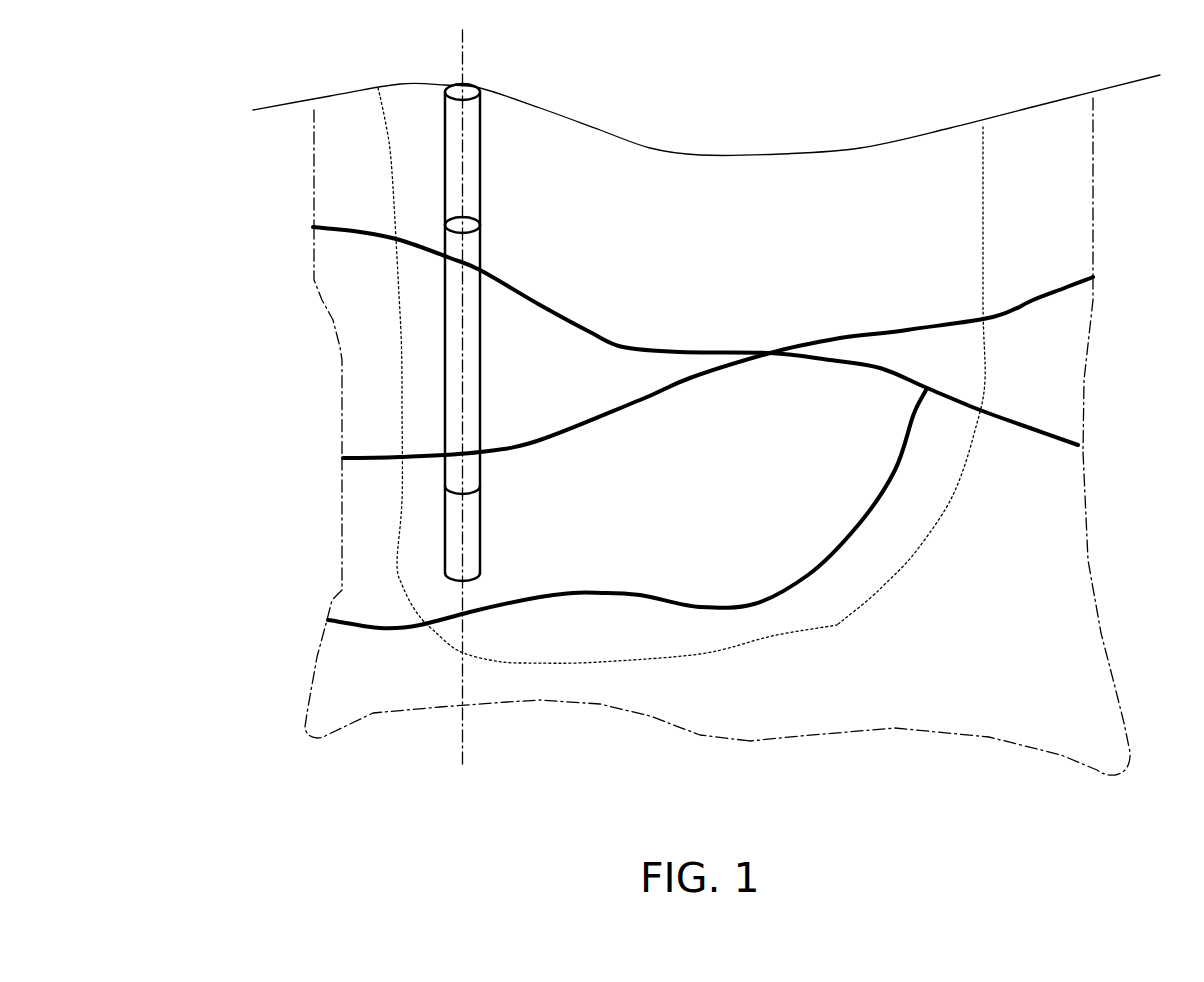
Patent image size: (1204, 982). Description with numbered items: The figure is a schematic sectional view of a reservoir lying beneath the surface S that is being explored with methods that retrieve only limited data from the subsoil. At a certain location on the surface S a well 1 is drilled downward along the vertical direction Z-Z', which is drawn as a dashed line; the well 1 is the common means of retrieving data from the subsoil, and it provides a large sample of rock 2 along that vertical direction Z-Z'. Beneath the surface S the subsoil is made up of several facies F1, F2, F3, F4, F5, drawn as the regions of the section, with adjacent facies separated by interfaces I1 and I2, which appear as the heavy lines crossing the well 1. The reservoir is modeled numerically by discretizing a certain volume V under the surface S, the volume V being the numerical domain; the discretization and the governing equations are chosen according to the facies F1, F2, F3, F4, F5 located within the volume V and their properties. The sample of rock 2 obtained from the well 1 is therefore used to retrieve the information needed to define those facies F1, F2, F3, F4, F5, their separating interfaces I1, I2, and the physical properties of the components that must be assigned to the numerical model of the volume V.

The well 1 is at (480, 173).
The sample of rock 2 is at (480, 243).
The surface S is at (627, 137).
The facies F1 is at (1010, 43).
The facies F2 is at (358, 380).
The facies F3 is at (358, 582).
The facies F4 is at (1070, 385).
The facies F5 is at (1030, 620).
The interface I1 is at (457, 263).
The interface I2 is at (450, 458).
The volume V is at (834, 629).
The vertical direction Z-Z' Z is at (480, 582).
The vertical direction Z- Z' is at (483, 215).